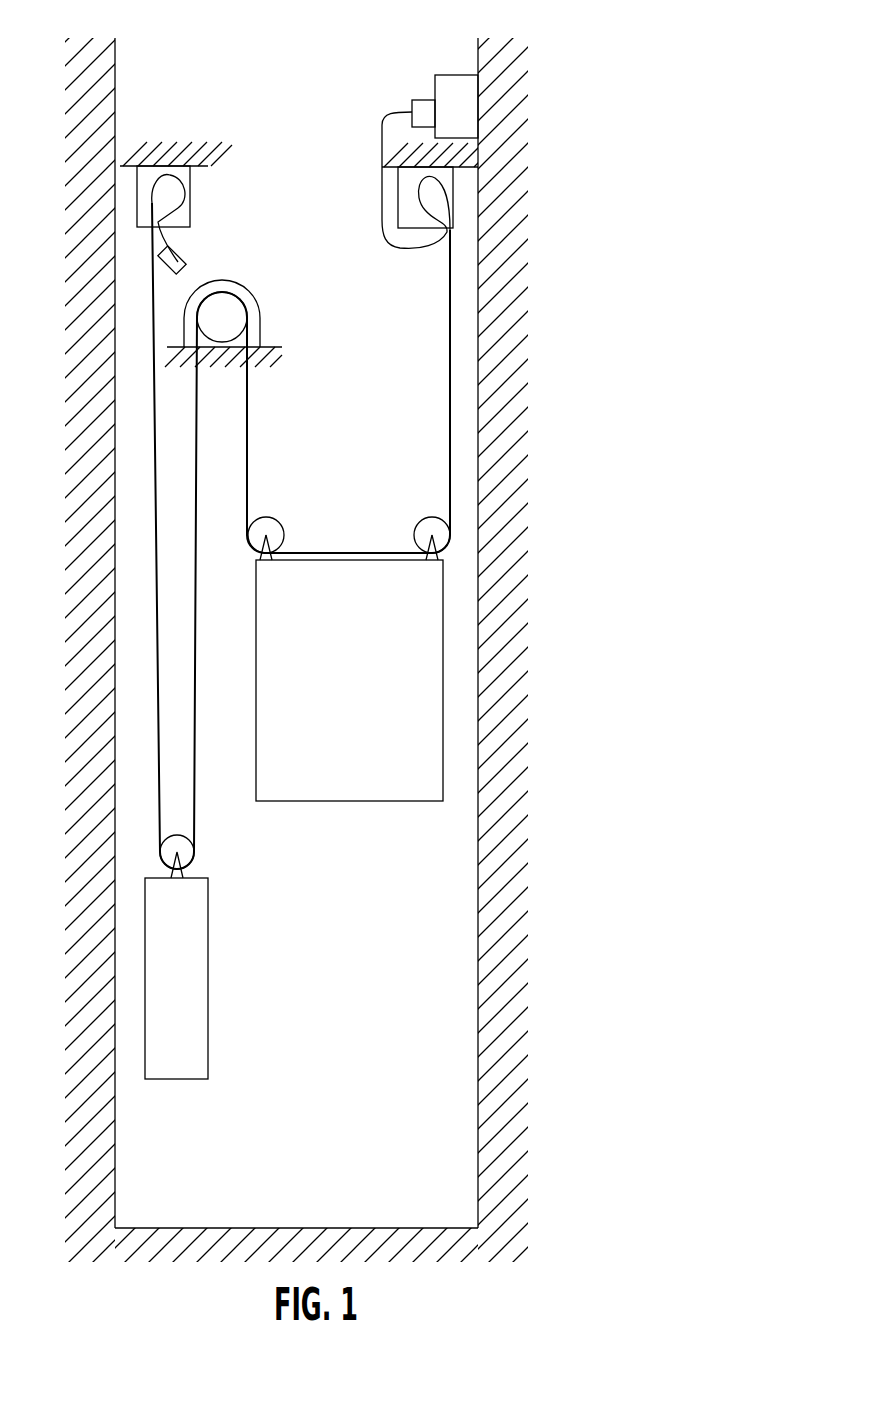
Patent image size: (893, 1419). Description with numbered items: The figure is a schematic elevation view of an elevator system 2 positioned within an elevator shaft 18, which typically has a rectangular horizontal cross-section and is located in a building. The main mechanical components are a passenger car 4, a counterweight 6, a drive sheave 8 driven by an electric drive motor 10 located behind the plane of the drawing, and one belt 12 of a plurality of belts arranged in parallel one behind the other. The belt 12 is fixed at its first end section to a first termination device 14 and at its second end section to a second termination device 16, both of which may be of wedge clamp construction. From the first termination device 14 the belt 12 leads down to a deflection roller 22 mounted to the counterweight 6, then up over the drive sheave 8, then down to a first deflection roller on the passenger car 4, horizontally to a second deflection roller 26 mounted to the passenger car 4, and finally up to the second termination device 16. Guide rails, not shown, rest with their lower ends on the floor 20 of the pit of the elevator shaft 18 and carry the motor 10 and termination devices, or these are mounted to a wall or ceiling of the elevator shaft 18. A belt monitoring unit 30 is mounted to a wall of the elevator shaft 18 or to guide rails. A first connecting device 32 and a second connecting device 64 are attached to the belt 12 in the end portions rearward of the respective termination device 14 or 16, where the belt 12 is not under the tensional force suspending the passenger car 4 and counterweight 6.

The elevator system 2 is at (320, 95).
The passenger car 4 is at (347, 783).
The counterweight 6 is at (180, 1063).
The drive sheave 8 is at (208, 303).
The electric drive motor 10 is at (255, 307).
The belt 12 is at (247, 434).
The first termination device 14 is at (147, 187).
The second termination device 16 is at (448, 177).
The elevator shaft 18 is at (510, 829).
The floor 20 is at (262, 1228).
The deflection roller 22 is at (192, 850).
The second deflection roller 26 is at (273, 528).
The belt monitoring unit 30 is at (462, 108).
The connecting device 32 is at (185, 258).
The connecting device 64 is at (422, 112).